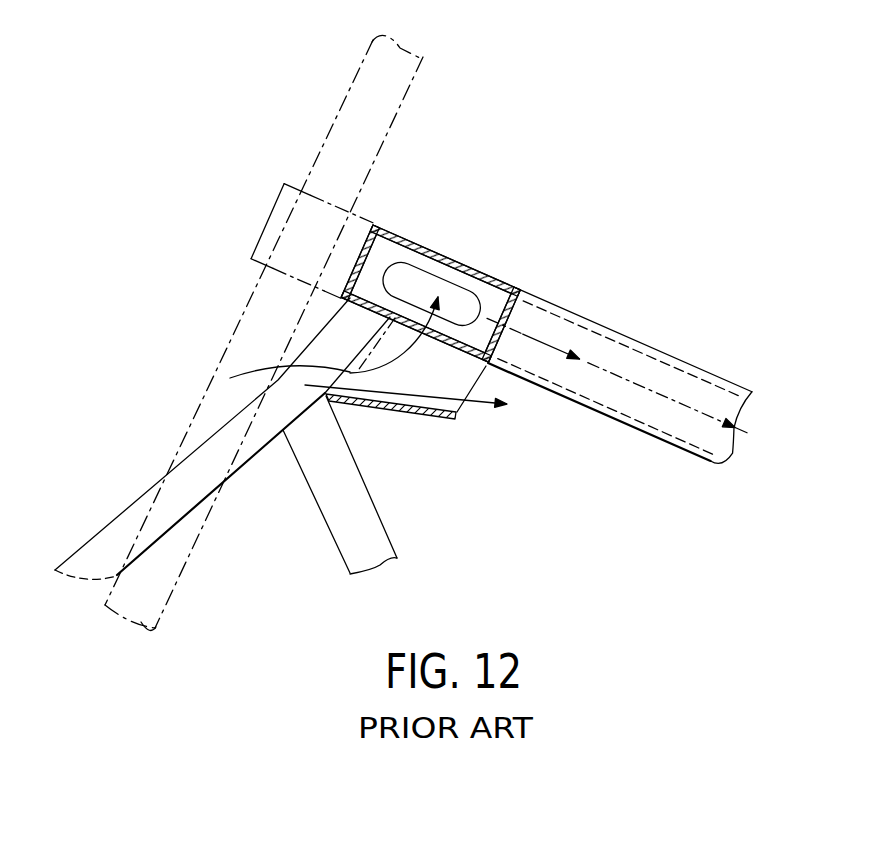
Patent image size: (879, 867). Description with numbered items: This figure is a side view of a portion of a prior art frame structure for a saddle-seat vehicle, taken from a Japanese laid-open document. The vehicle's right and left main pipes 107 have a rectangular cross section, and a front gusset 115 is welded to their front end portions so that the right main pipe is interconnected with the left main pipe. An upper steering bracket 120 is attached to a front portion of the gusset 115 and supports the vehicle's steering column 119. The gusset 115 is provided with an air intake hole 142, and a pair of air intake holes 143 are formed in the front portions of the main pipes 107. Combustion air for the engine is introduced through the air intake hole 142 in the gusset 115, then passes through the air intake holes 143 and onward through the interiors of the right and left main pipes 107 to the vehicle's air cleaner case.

The main pipe 107 is at (605, 327).
The front gusset 115 is at (477, 268).
The steering column 119 is at (330, 130).
The upper steering bracket 120 is at (262, 228).
The air intake hole 142 is at (392, 326).
The air intake hole 143 is at (405, 268).